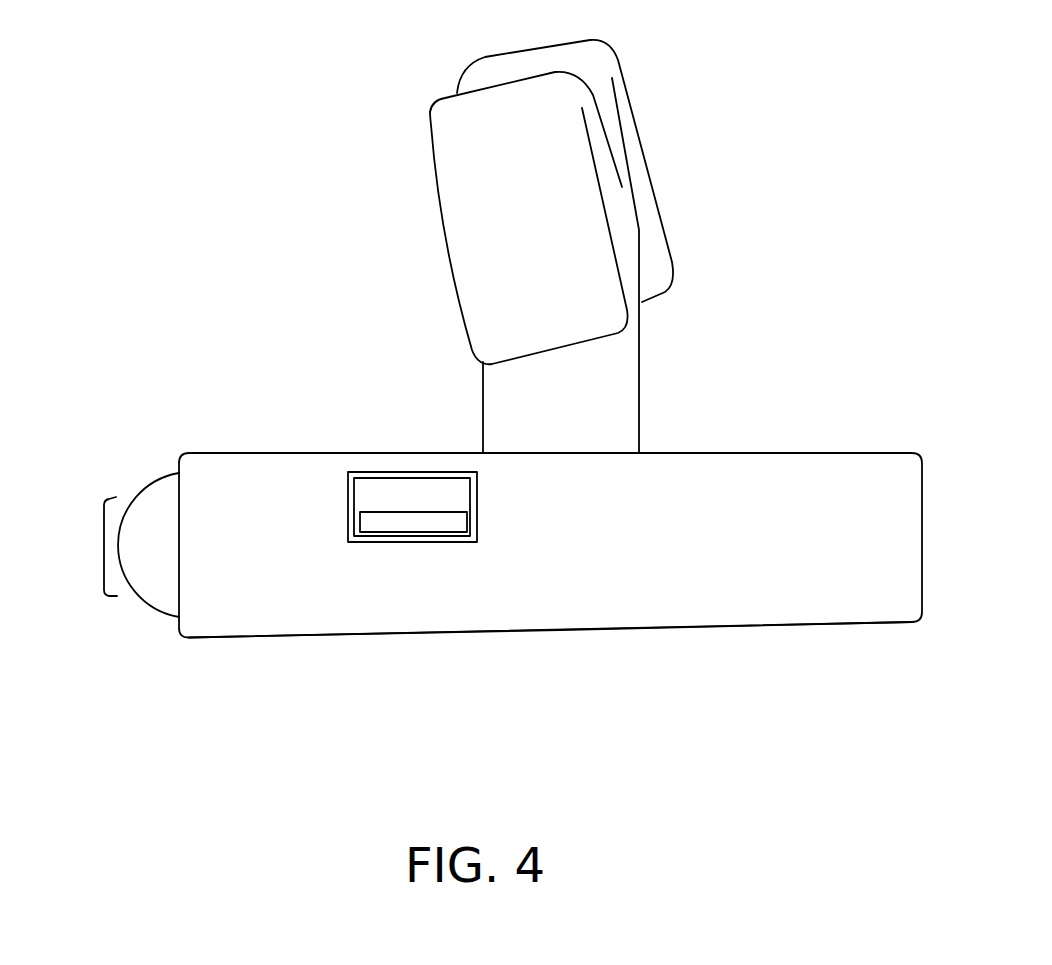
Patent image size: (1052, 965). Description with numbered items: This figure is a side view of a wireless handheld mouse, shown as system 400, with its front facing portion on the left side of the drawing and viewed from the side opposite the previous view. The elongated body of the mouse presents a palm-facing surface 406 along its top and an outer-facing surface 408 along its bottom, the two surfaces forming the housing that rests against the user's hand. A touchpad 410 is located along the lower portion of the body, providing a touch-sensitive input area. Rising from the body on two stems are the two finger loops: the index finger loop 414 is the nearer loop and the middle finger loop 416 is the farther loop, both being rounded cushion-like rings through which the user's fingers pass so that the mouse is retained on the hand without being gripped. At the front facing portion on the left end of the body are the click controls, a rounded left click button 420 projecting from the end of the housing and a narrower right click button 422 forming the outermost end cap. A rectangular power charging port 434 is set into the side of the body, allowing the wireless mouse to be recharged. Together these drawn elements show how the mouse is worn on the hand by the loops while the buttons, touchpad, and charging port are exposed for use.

The system 400 is at (229, 116).
The palm-facing surface 406 is at (253, 451).
The outer-facing surface 408 is at (771, 624).
The touchpad 410 is at (358, 633).
The index finger loop 414 is at (463, 252).
The middle finger loop 416 is at (650, 173).
The left click button 420 is at (138, 515).
The right click button 422 is at (113, 597).
The power charging port 434 is at (432, 493).